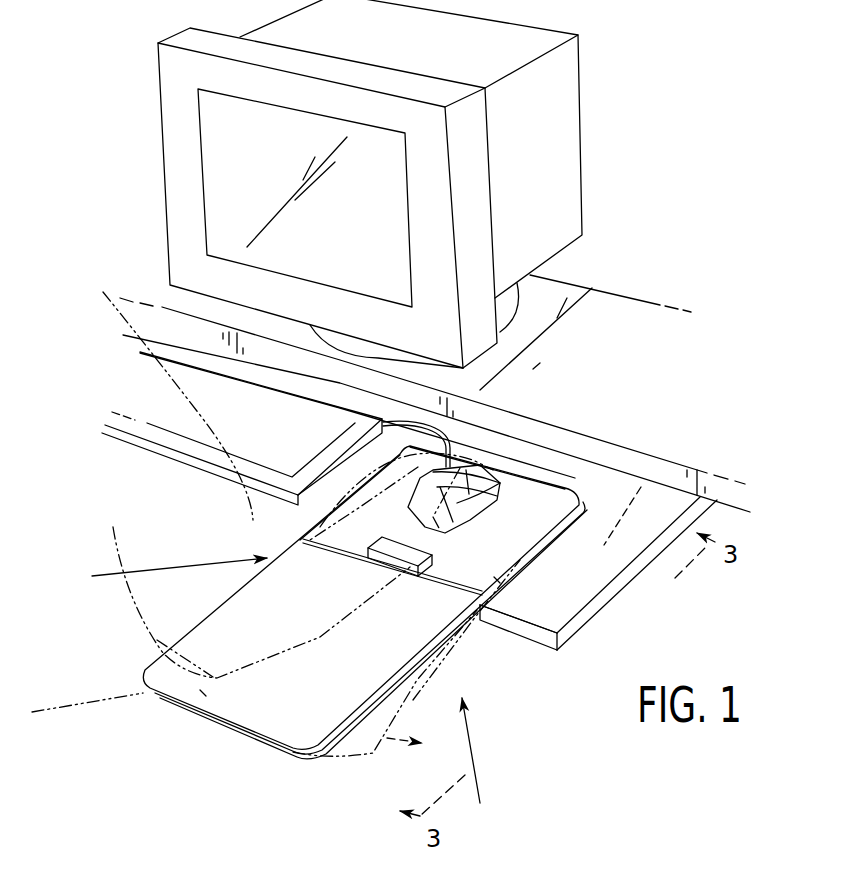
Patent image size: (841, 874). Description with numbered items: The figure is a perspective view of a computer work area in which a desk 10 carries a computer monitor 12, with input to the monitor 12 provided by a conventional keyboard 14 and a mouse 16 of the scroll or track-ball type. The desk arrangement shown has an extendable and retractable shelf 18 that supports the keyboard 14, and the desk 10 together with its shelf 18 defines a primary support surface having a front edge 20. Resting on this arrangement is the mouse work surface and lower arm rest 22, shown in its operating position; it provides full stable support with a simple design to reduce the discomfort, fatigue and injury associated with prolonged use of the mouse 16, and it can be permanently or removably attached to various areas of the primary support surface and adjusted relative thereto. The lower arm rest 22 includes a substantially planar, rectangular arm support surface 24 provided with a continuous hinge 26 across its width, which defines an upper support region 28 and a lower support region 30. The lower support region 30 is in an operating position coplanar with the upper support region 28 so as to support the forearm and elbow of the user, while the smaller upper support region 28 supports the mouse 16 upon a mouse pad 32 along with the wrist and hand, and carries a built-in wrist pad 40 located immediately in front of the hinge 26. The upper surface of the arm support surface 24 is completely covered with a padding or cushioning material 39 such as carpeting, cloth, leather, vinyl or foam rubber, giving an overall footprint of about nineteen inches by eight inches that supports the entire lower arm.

The desk 10 is at (597, 312).
The computer monitor 12 is at (558, 119).
The keyboard 14 is at (152, 403).
The mouse 16 is at (440, 497).
The shelf 18 is at (585, 582).
The front edge 20 is at (507, 627).
The lower arm rest 22 is at (477, 766).
The arm support surface 24 is at (164, 577).
The hinge 26 is at (435, 578).
The upper support region 28 is at (572, 491).
The lower support region 30 is at (213, 725).
The mouse pad 32 is at (657, 488).
The padding or cushioning material 39 is at (497, 580).
The wrist pad 40 is at (388, 553).